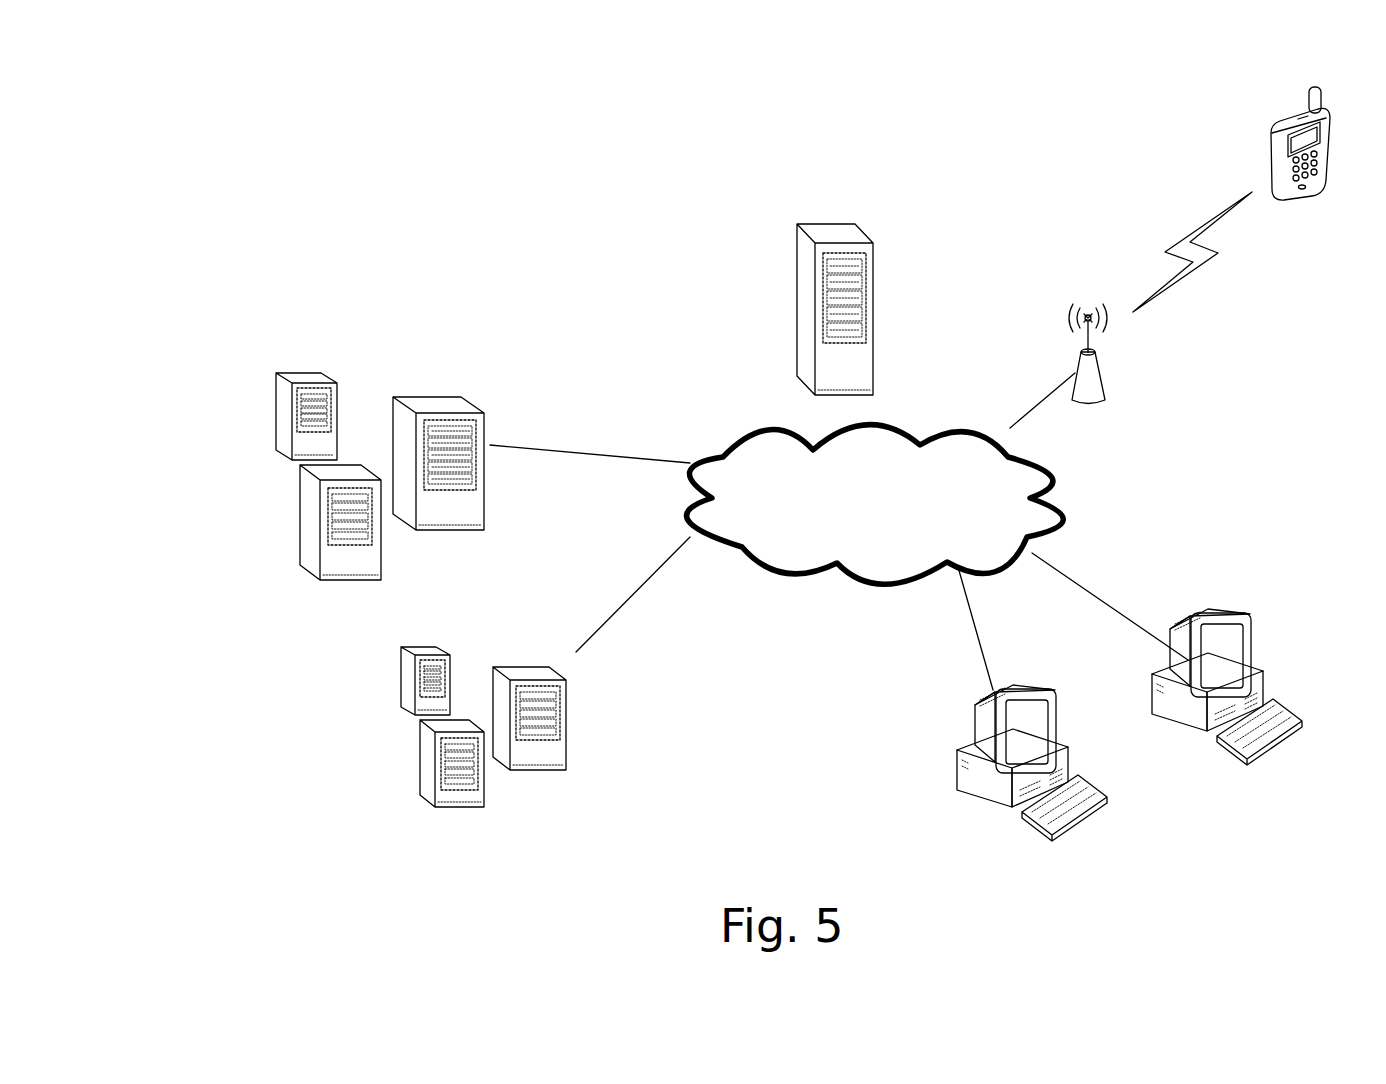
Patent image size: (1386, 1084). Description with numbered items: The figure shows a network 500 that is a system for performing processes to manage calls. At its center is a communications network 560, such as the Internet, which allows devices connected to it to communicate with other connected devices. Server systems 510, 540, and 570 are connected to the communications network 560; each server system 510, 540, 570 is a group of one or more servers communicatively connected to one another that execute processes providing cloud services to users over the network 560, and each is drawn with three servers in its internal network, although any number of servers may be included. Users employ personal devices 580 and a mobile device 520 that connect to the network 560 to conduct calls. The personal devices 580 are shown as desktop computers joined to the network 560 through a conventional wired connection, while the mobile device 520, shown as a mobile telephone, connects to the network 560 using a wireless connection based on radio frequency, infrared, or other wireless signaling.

The network 500 is at (701, 244).
The server system 510 is at (833, 235).
The mobile device 520 is at (1282, 116).
The server system 540 is at (483, 395).
The communications network 560 is at (830, 577).
The server system 570 is at (312, 710).
The personal device 580 is at (1107, 808).